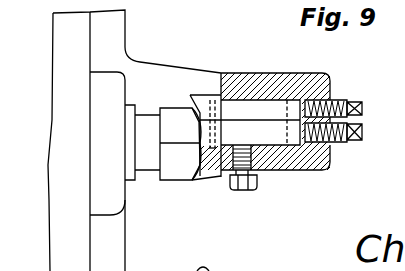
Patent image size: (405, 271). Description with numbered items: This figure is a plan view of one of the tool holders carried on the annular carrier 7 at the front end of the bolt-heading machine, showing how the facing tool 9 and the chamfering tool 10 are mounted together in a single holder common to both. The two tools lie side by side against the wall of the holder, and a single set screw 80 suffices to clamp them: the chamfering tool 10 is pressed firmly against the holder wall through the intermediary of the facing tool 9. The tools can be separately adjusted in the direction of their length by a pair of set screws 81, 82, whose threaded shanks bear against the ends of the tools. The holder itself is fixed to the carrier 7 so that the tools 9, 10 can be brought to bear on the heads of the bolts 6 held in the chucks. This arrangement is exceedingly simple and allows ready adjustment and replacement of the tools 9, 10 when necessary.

The annular carrier 7 is at (115, 248).
The bolt 6 is at (175, 167).
The facing tool 9 is at (267, 132).
The chamfering tool 10 is at (263, 103).
The set screw 80 is at (235, 190).
The set screw 81 is at (355, 99).
The set screw 82 is at (362, 132).